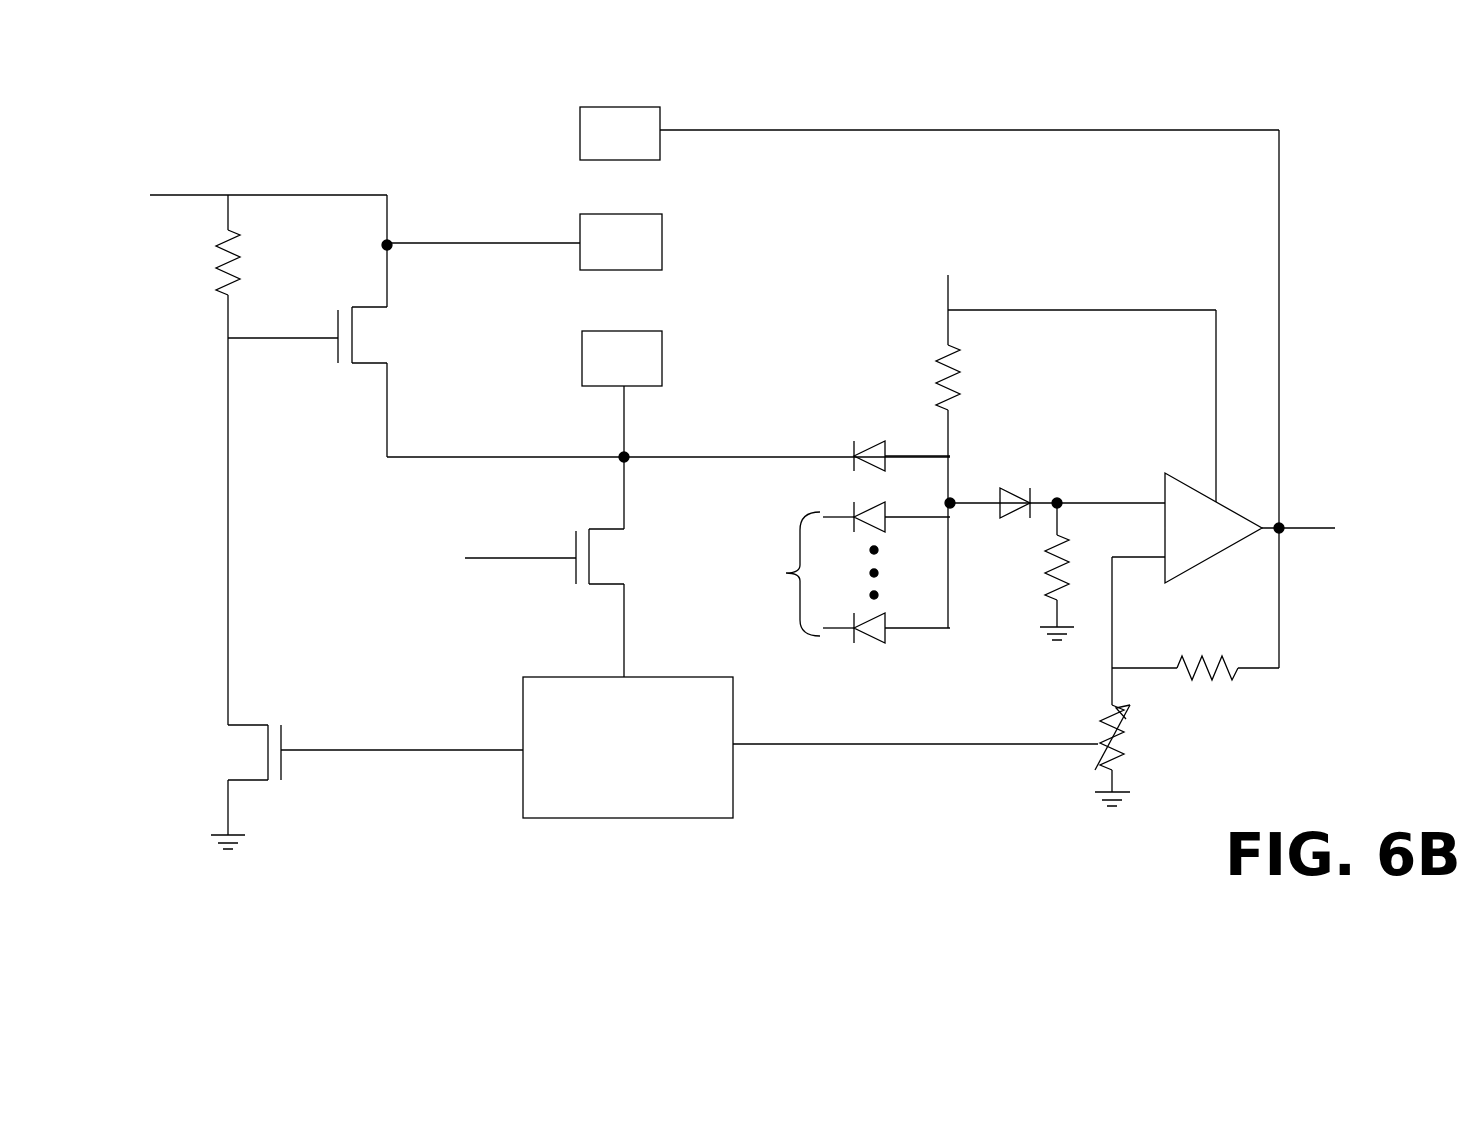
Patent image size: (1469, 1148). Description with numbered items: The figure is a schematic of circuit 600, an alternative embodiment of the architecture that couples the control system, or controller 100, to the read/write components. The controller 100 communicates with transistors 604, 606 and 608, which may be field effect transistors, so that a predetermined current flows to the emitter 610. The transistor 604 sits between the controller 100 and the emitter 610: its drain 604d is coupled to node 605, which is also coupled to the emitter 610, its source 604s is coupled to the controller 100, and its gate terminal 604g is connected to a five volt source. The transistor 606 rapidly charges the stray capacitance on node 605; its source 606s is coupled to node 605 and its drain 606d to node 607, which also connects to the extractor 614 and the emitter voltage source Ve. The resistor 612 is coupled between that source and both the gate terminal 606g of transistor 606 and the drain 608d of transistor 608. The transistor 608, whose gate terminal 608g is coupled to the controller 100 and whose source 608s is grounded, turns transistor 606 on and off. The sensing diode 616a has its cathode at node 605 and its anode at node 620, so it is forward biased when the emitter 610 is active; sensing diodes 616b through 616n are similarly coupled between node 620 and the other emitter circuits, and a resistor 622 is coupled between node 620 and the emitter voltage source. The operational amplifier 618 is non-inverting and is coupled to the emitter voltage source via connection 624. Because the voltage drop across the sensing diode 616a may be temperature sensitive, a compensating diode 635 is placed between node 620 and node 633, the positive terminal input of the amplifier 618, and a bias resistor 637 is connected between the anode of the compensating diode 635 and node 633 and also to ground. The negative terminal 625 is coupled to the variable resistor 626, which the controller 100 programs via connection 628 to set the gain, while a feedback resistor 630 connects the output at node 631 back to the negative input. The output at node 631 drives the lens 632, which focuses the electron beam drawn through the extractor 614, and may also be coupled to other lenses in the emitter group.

The circuit 600 is at (1305, 778).
The control system 100 is at (648, 777).
The transistor 604 is at (552, 556).
The drain 604d is at (620, 525).
The gate terminal 604g is at (565, 555).
The source 604s is at (620, 590).
The node 605 is at (620, 455).
The transistor 606 is at (320, 344).
The drain 606d is at (383, 305).
The gate terminal 606g is at (332, 342).
The source 606s is at (385, 367).
The node 607 is at (392, 245).
The transistor 608 is at (294, 751).
The drain 608d is at (236, 723).
The gate terminal 608g is at (294, 749).
The source 608s is at (240, 782).
The emitter 610 is at (642, 371).
The resistor 612 is at (204, 262).
The extractor 614 is at (641, 254).
The sensing diode 616a is at (872, 440).
The sensing diode 616b is at (874, 505).
The sensing diode 616n is at (882, 638).
The operational amplifier 618 is at (1222, 542).
The node 620 is at (954, 500).
The resistor 622 is at (972, 377).
The connection 624 is at (1214, 355).
The negative terminal 625 is at (1114, 646).
The variable resistor 626 is at (1135, 737).
The connection 628 is at (990, 739).
The feedback resistor 630 is at (1195, 684).
The node 631 is at (1284, 526).
The lens 632 is at (640, 145).
The node 633 is at (1062, 500).
The compensating diode 635 is at (1018, 517).
The bias resistor 637 is at (1039, 565).